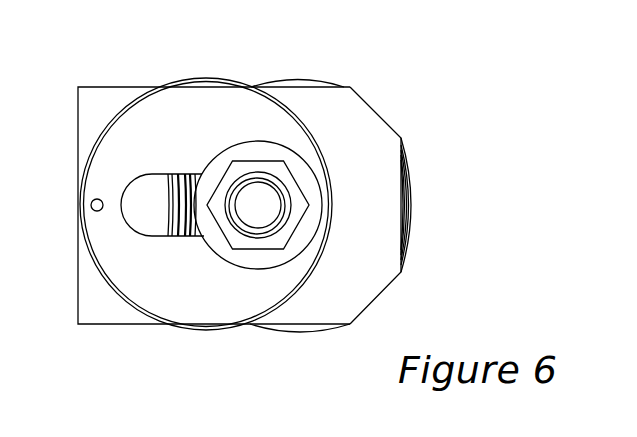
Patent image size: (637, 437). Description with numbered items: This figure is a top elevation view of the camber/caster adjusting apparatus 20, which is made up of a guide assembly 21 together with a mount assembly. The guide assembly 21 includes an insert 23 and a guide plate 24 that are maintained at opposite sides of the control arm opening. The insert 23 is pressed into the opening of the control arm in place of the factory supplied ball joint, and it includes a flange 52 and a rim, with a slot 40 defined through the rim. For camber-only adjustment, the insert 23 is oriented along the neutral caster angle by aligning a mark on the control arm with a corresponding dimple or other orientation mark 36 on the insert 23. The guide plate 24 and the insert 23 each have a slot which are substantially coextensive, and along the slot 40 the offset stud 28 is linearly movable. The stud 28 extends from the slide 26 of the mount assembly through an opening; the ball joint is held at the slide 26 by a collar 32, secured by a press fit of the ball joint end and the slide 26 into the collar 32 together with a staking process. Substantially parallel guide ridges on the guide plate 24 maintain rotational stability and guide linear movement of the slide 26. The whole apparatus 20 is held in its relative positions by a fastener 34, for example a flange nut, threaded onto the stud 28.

The camber/caster adjusting apparatus 20 is at (422, 273).
The guide assembly 21 is at (357, 128).
The insert 23 is at (108, 148).
The guide plate 24 is at (328, 100).
The slide 26 is at (407, 185).
The offset stud 28 is at (260, 215).
The collar 32 is at (420, 225).
The fastener 34 is at (228, 230).
The orientation mark 36 is at (88, 212).
The slot 40 is at (160, 174).
The flange 52 is at (198, 107).